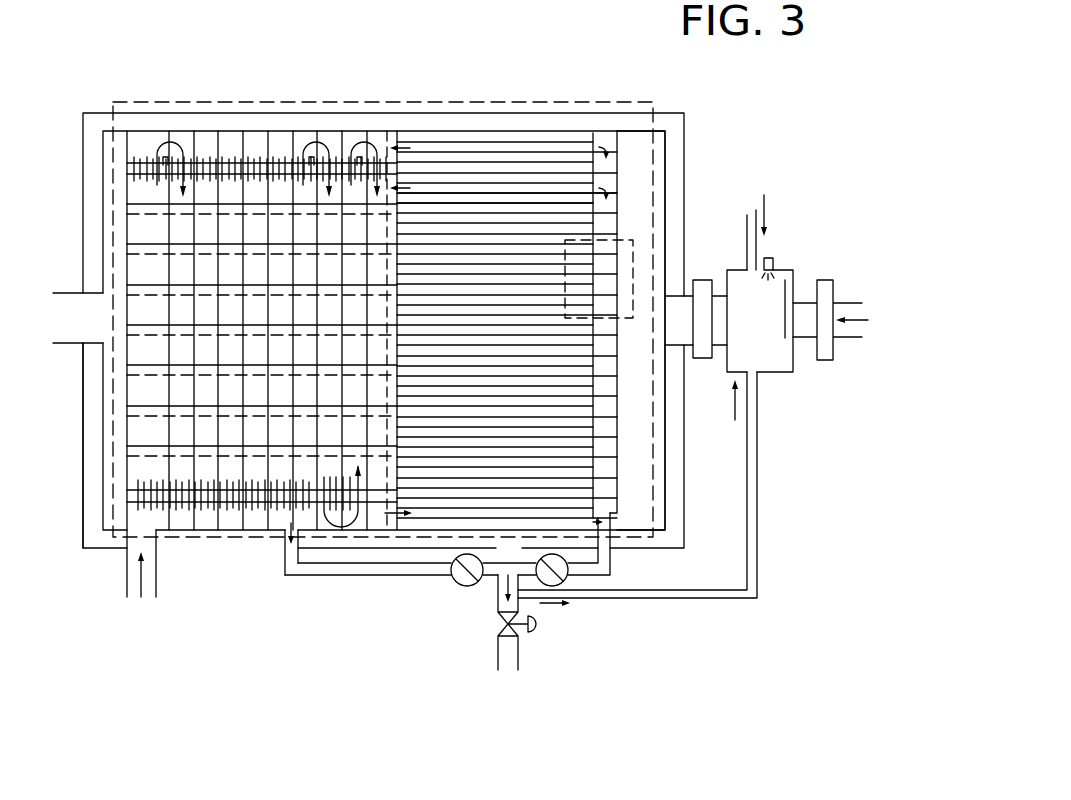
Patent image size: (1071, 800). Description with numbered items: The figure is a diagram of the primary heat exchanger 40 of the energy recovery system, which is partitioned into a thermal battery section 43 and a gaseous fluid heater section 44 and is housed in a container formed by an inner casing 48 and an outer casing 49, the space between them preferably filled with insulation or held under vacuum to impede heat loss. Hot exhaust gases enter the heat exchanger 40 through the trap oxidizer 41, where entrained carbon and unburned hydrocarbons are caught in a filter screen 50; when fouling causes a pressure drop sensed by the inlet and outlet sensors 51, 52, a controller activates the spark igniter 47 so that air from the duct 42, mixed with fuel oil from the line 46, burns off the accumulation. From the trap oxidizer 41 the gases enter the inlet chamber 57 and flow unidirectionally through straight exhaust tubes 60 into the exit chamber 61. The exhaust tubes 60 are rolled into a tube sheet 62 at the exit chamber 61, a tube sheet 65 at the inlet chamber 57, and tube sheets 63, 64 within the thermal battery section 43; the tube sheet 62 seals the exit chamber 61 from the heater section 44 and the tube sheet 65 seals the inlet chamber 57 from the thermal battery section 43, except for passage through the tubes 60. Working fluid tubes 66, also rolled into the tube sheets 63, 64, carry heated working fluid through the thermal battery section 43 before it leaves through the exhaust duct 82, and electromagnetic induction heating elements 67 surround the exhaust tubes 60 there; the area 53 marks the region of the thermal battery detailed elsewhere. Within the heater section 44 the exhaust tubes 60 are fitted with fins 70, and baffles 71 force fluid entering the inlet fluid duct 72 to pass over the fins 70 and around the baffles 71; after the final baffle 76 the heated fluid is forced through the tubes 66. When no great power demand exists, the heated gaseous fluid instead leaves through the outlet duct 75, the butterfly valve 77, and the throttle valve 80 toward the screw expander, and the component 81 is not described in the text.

The primary heat exchanger 40 is at (390, 91).
The trap oxidizer 41 is at (745, 336).
The duct 42 is at (757, 460).
The thermal battery section 43 is at (518, 100).
The gaseous fluid heater section 44 is at (238, 100).
The line 46 is at (747, 232).
The spark igniter 47 is at (770, 258).
The inner casing 48 is at (112, 455).
The outer casing 49 is at (83, 528).
The filter screen 50 is at (785, 345).
The inlet sensor 51 is at (826, 282).
The outlet sensor 52 is at (701, 292).
The area 53 is at (622, 240).
The inlet chamber 57 is at (625, 445).
The exhaust tubes 60 is at (132, 206).
The exit chamber 61 is at (112, 352).
The tube sheet 62 is at (128, 307).
The tube sheet 63 is at (382, 330).
The tube sheet 64 is at (598, 145).
The tube sheet 65 is at (621, 135).
The working fluid tubes 66 is at (448, 190).
The electromagnetic induction heating elements 67 is at (566, 197).
The fins 70 is at (203, 508).
The baffles 71 is at (268, 330).
The inlet fluid duct 72 is at (157, 563).
The outlet duct 75 is at (287, 558).
The final baffle 76 is at (262, 330).
The butterfly valve 77 is at (462, 582).
The throttle valve 80 is at (505, 627).
The pump 81 is at (531, 561).
The exhaust duct 82 is at (612, 558).